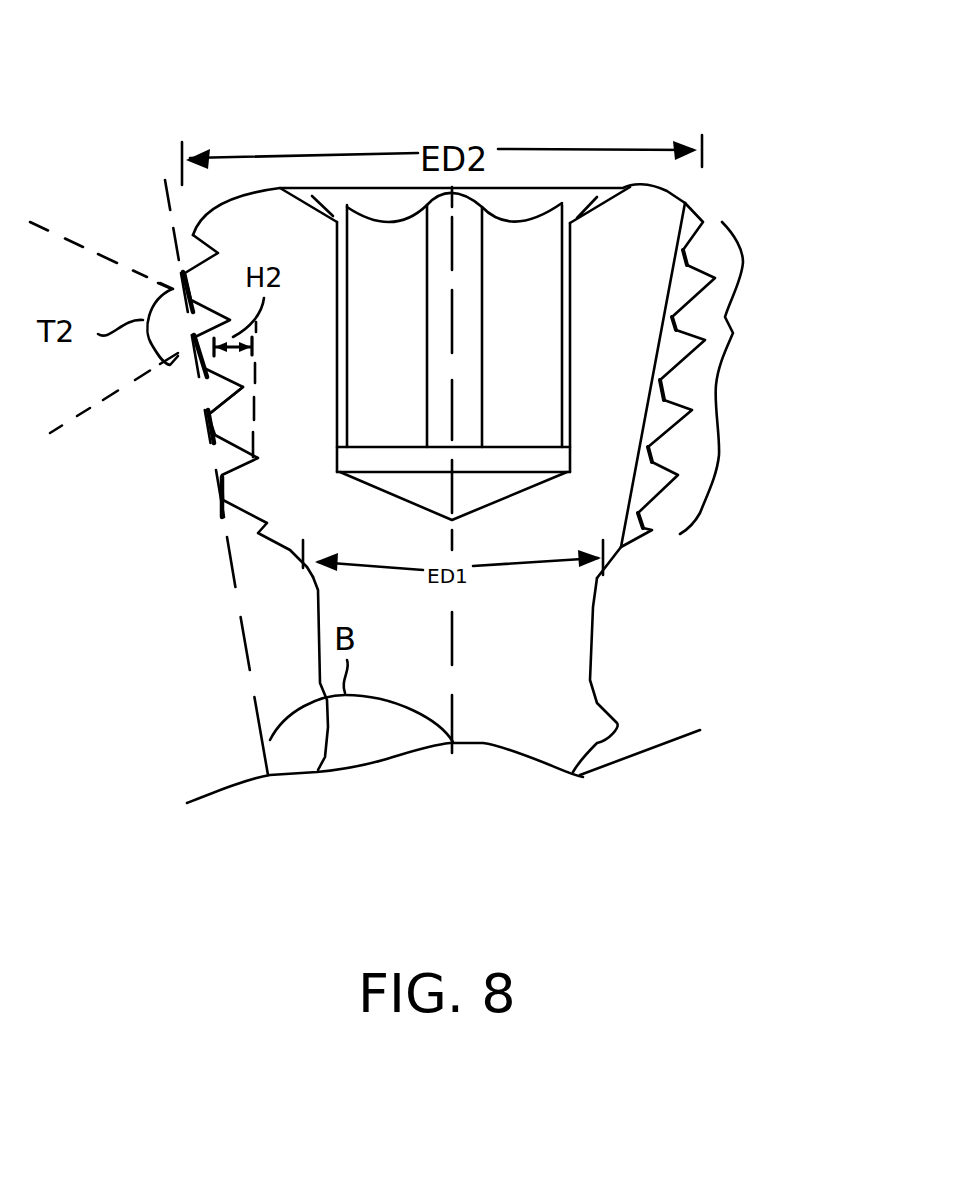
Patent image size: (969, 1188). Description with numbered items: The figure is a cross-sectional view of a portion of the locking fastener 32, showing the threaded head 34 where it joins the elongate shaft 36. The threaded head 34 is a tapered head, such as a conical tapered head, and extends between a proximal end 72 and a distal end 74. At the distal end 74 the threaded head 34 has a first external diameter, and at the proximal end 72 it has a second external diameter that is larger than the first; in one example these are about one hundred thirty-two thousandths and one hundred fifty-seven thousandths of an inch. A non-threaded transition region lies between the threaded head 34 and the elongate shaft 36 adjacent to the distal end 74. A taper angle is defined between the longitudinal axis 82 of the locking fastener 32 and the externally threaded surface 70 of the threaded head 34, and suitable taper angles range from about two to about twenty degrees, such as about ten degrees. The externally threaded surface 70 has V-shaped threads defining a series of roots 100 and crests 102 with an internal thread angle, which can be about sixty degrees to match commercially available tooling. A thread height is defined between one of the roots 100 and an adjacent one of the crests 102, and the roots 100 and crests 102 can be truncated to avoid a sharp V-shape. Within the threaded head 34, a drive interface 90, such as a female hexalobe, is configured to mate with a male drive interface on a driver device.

The locking fastener 32 is at (793, 120).
The threaded head 34 is at (730, 420).
The elongate shaft 36 is at (616, 732).
The externally threaded surface 70 is at (709, 375).
The proximal end 72 is at (672, 190).
The distal end 74 is at (597, 578).
The longitudinal axis 82 is at (457, 638).
The drive interface 90 is at (541, 291).
The roots 100 is at (257, 453).
The crests 102 is at (206, 418).